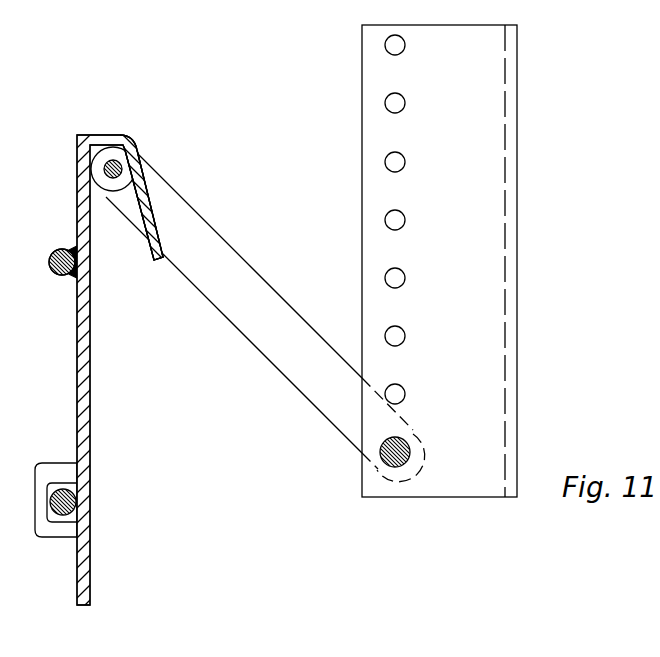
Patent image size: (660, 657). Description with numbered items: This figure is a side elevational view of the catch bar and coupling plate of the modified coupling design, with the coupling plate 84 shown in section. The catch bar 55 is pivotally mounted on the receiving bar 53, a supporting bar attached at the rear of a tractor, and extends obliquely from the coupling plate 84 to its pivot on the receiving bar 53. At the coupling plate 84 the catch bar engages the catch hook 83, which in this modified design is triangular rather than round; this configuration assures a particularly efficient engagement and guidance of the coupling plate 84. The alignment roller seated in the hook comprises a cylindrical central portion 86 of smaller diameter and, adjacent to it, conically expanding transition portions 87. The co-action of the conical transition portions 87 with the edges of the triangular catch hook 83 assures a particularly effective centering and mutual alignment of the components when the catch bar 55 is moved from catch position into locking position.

The receiving bar 53 is at (365, 72).
The catch bar 55 is at (240, 273).
The catch hook 83 is at (147, 213).
The coupling plate 84 is at (122, 349).
The central portion 86 is at (131, 152).
The conical transition portion 87 is at (112, 154).